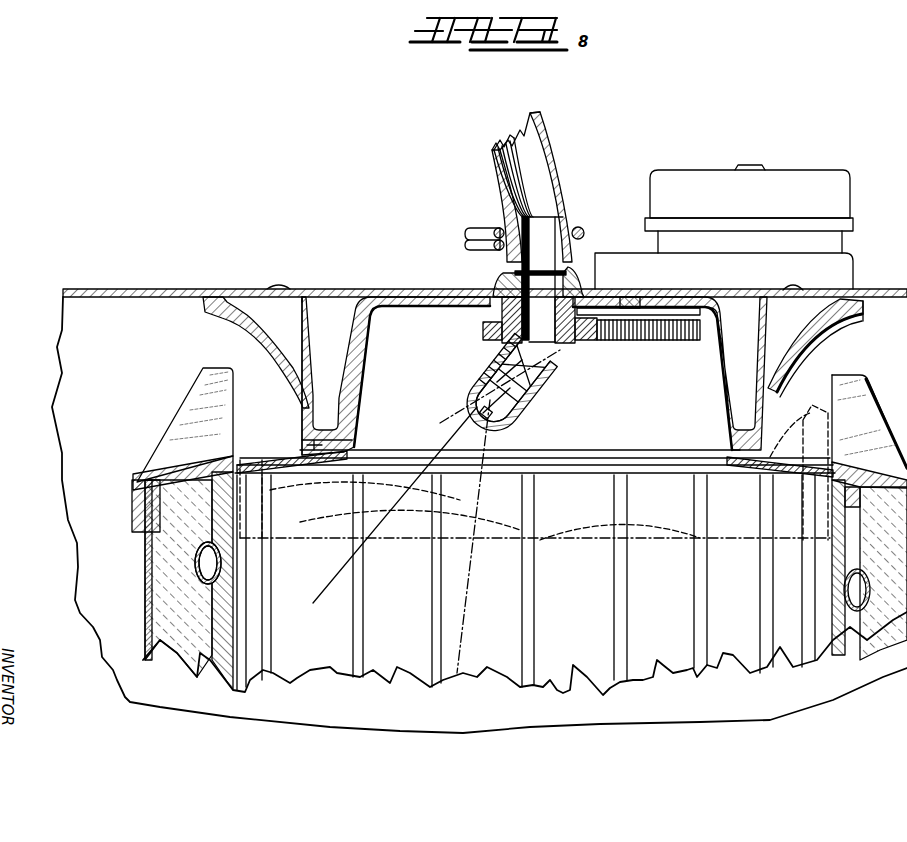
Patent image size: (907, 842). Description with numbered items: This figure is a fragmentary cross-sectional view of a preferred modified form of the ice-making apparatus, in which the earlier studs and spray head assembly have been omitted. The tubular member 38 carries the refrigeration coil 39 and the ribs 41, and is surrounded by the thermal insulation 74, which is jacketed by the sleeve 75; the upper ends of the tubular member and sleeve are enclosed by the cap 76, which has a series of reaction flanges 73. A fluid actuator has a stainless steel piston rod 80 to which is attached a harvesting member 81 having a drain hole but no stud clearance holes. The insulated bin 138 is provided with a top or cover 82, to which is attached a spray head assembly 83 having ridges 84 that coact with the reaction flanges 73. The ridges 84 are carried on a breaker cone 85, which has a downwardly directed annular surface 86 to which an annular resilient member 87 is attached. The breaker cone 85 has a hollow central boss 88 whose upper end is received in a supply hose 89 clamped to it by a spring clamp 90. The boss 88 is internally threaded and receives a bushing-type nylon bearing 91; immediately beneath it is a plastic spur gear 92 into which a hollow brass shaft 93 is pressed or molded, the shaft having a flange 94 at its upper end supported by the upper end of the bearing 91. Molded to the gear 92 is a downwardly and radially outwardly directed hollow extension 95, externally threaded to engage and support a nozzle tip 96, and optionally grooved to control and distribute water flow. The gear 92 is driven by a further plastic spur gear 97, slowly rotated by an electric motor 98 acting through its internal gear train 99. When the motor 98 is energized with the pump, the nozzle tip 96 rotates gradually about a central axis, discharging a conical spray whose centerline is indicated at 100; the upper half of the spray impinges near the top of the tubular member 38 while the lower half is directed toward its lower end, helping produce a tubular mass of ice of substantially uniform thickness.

The tubular member 38 is at (228, 600).
The refrigeration coil 39 is at (224, 566).
The ribs 41 is at (350, 660).
The reaction flanges 73 is at (230, 428).
The thermal insulation 74 is at (160, 478).
The sleeve 75 is at (145, 570).
The cap 76 is at (185, 478).
The piston rod 80 is at (558, 636).
The harvesting member 81 is at (502, 470).
The top or cover 82 is at (128, 291).
The spray head assembly 83 is at (400, 291).
The ridges 84 is at (220, 312).
The breaker cone 85 is at (315, 398).
The annular surface 86 is at (348, 458).
The annular resilient member 87 is at (272, 470).
The hollow central boss 88 is at (500, 270).
The supply hose 89 is at (560, 158).
The spring clamp 90 is at (478, 228).
The nylon bearing 91 is at (485, 308).
The plastic spur gear 92 is at (580, 340).
The brass shaft 93 is at (557, 357).
The flange 94 is at (576, 266).
The hollow extension 95 is at (550, 378).
The nozzle tip 96 is at (518, 418).
The plastic spur gear 97 is at (668, 322).
The electric motor 98 is at (814, 188).
The internal gear train 99 is at (840, 268).
The centerline of the cone 100 is at (398, 520).
The insulated bin 138 is at (80, 356).